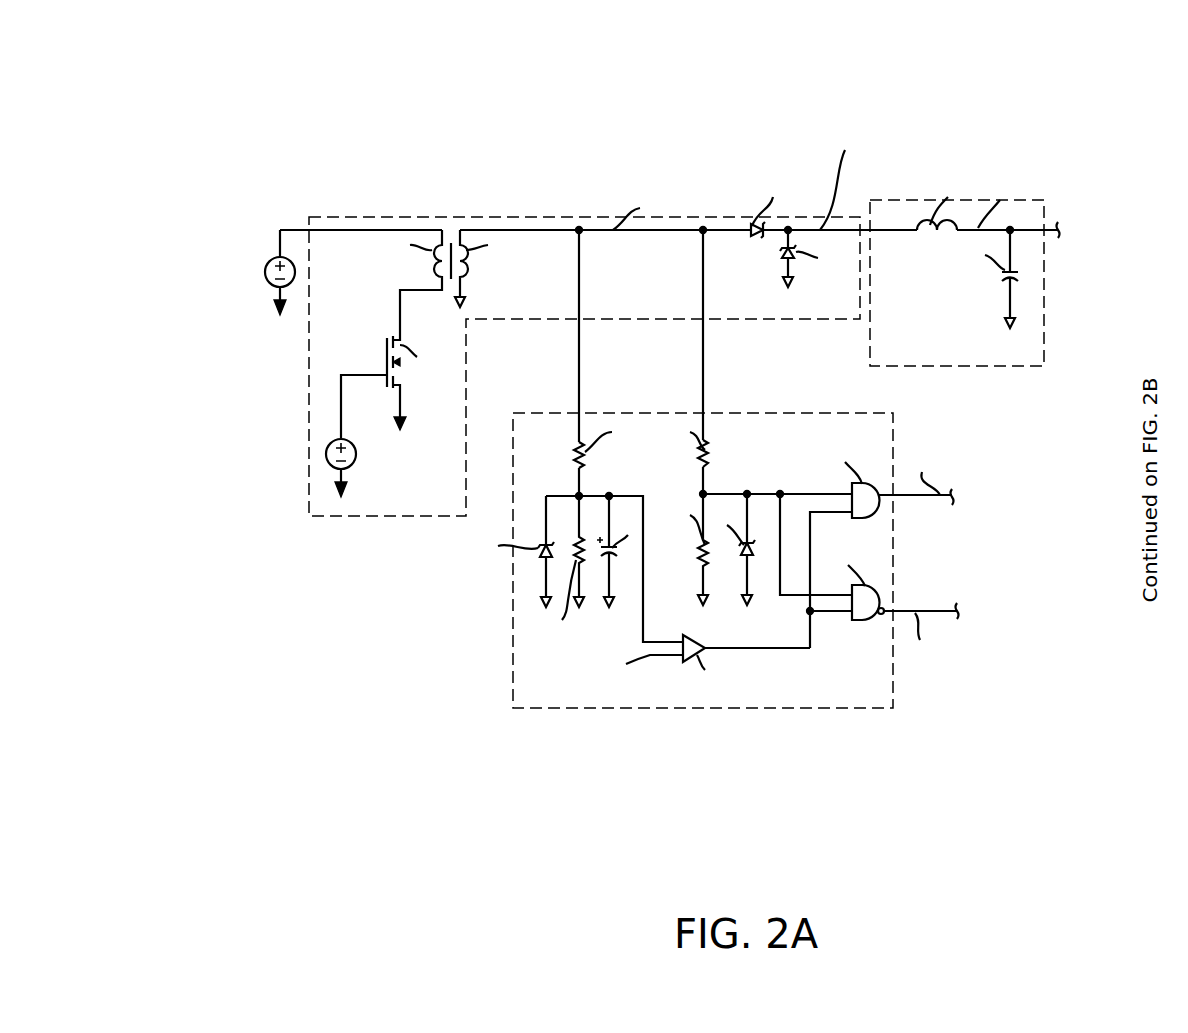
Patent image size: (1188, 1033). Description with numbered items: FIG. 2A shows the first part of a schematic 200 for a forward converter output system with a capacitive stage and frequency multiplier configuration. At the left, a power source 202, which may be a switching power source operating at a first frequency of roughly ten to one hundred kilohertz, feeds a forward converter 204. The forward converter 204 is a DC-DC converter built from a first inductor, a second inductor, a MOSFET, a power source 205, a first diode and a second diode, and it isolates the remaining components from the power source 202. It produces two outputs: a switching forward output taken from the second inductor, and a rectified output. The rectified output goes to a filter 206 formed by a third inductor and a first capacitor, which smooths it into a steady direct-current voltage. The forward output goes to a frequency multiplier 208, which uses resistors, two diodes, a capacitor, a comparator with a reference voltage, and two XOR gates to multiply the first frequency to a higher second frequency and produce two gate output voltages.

The schematic 200 is at (195, 108).
The power source 202 is at (272, 258).
The forward converter 204 is at (445, 208).
The power source 205 is at (326, 445).
The filter 206 is at (885, 200).
The frequency multiplier 208 is at (696, 709).